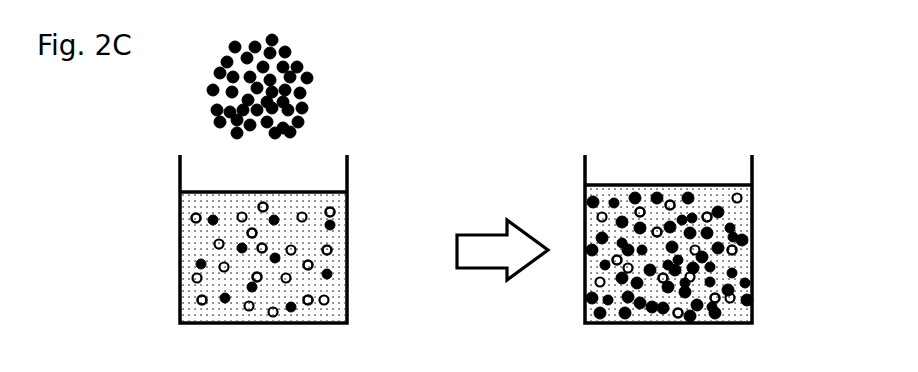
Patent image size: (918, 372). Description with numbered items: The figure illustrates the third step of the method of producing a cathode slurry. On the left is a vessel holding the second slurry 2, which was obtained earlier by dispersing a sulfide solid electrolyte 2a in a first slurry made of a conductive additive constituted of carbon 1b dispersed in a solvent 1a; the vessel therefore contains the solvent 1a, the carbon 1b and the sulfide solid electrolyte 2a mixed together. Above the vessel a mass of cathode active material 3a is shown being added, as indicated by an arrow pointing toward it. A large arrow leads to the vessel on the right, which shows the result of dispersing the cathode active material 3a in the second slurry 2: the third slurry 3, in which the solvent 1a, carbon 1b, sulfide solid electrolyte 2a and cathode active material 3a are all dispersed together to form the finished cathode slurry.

The solvent 1a is at (330, 288).
The conductive additive constituted of carbon 1b is at (334, 225).
The sulfide solid electrolyte 2a is at (331, 251).
The second slurry 2 is at (405, 212).
The cathode active material 3a is at (320, 90).
The third slurry 3 is at (810, 212).